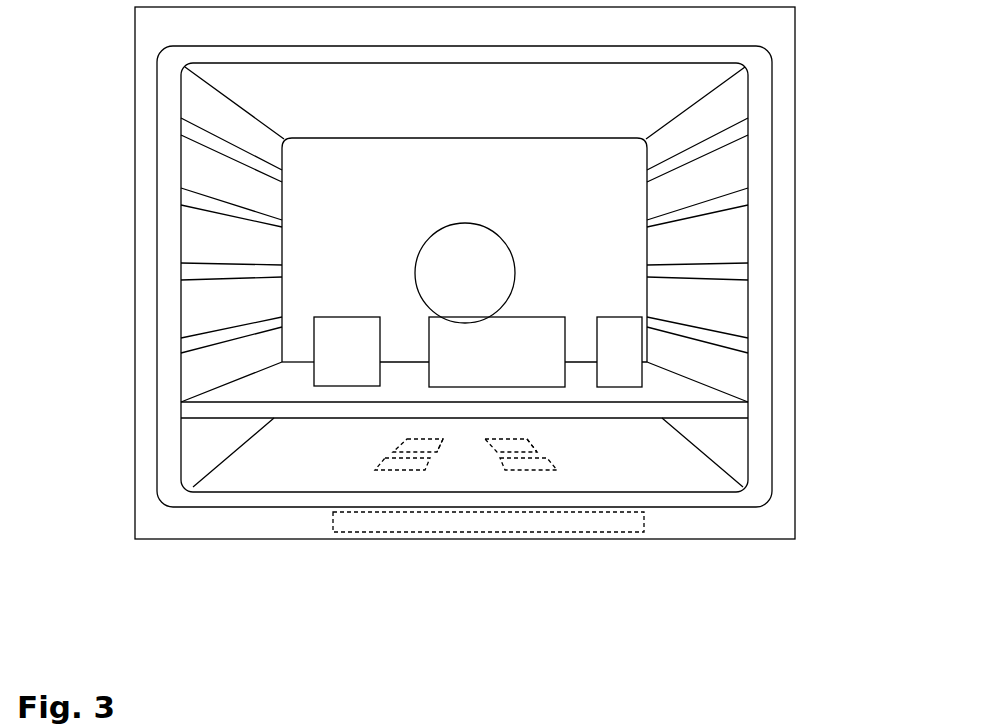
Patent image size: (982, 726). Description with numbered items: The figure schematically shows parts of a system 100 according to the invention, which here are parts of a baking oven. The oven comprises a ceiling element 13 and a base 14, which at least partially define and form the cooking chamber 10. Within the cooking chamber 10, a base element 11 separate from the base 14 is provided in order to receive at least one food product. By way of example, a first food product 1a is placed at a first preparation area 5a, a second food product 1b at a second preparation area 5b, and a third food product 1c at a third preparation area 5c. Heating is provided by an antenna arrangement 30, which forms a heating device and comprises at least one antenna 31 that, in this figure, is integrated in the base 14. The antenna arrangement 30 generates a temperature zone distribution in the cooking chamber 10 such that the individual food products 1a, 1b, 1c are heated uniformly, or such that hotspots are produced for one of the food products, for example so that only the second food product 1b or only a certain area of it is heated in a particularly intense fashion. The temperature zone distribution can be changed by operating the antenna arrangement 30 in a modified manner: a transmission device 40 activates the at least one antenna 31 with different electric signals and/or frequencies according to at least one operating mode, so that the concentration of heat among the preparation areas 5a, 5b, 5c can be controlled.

The system 100 is at (90, 123).
The cooking chamber 10 is at (298, 255).
The ceiling element 13 is at (690, 86).
The base element 11 is at (705, 402).
The base 14 is at (238, 457).
The first food product 1a is at (347, 351).
The second food product 1b is at (497, 352).
The third food product 1c is at (619, 352).
The first preparation area 5a is at (298, 349).
The second preparation area 5b is at (416, 345).
The third preparation area 5c is at (662, 342).
The antenna arrangement 30 is at (590, 456).
The antenna 31 is at (440, 444).
The transmission device 40 is at (645, 526).